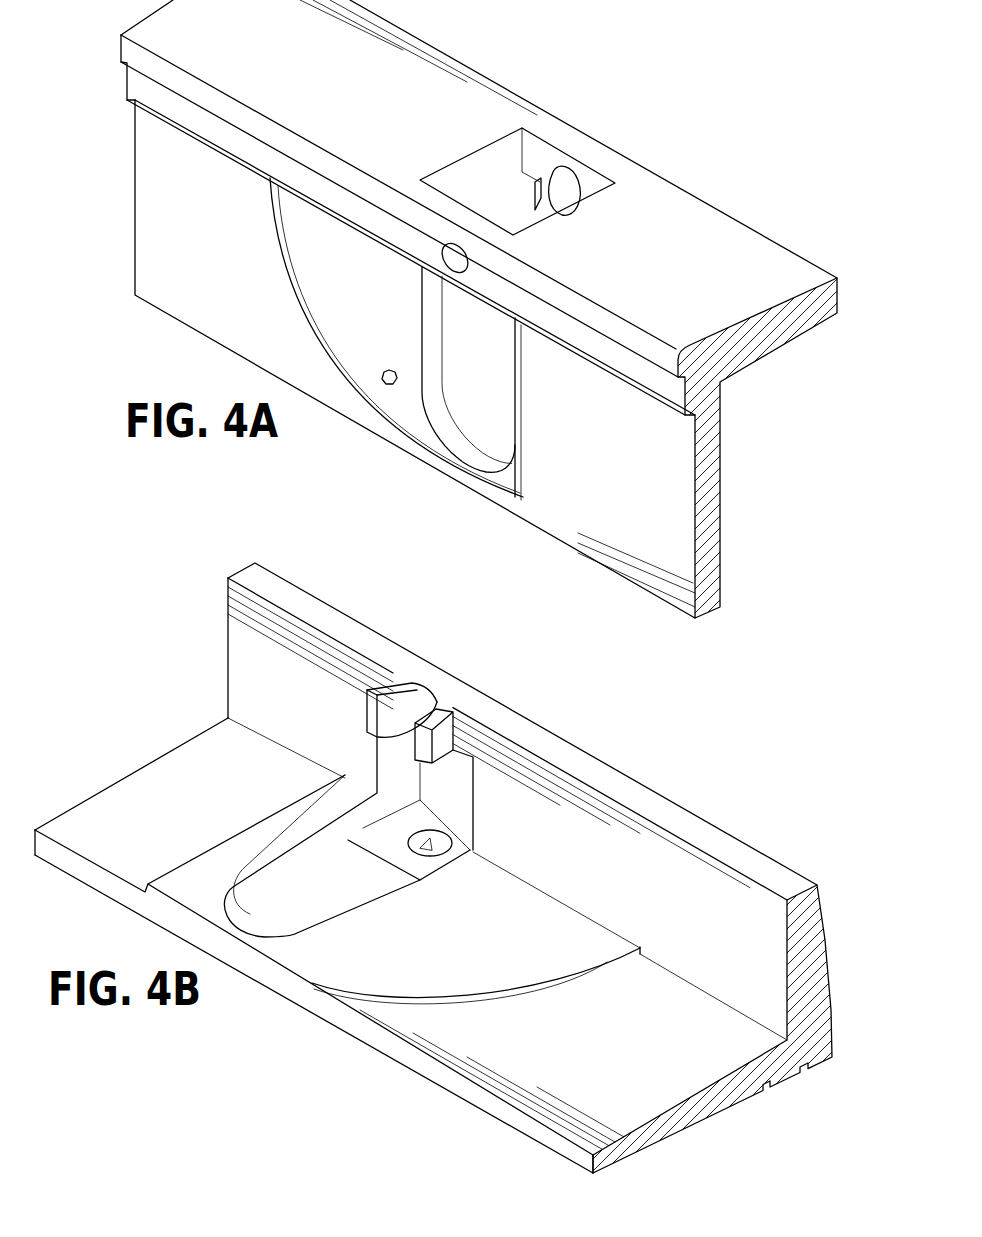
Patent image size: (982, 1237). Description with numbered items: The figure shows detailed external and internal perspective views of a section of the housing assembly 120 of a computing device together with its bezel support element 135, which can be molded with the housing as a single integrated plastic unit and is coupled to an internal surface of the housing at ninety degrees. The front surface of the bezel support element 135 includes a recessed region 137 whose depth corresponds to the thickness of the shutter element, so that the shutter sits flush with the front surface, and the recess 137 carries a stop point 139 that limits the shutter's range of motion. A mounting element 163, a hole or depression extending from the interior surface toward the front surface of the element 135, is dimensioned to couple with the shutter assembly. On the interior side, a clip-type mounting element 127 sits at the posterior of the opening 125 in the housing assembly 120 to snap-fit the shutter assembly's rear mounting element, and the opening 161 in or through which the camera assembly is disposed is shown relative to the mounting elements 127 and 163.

In FIG. 4A, the housing assembly 120 is at (708, 218).
In FIG. 4B, the housing assembly 120 is at (826, 904).
In FIG. 4A, the opening 125 is at (479, 162).
In FIG. 4A, the mounting element 127 is at (553, 203).
In FIG. 4B, the mounting element 127 is at (367, 720).
In FIG. 4A, the bezel support element 135 is at (212, 320).
In FIG. 4B, the bezel support element 135 is at (657, 1097).
In FIG. 4A, the recessed region 137 is at (320, 258).
In FIG. 4A, the stop point 139 is at (392, 368).
In FIG. 4A, the opening 161 is at (470, 437).
In FIG. 4B, the opening 161 is at (303, 930).
In FIG. 4A, the mounting element 163 is at (440, 264).
In FIG. 4B, the mounting element 163 is at (437, 840).